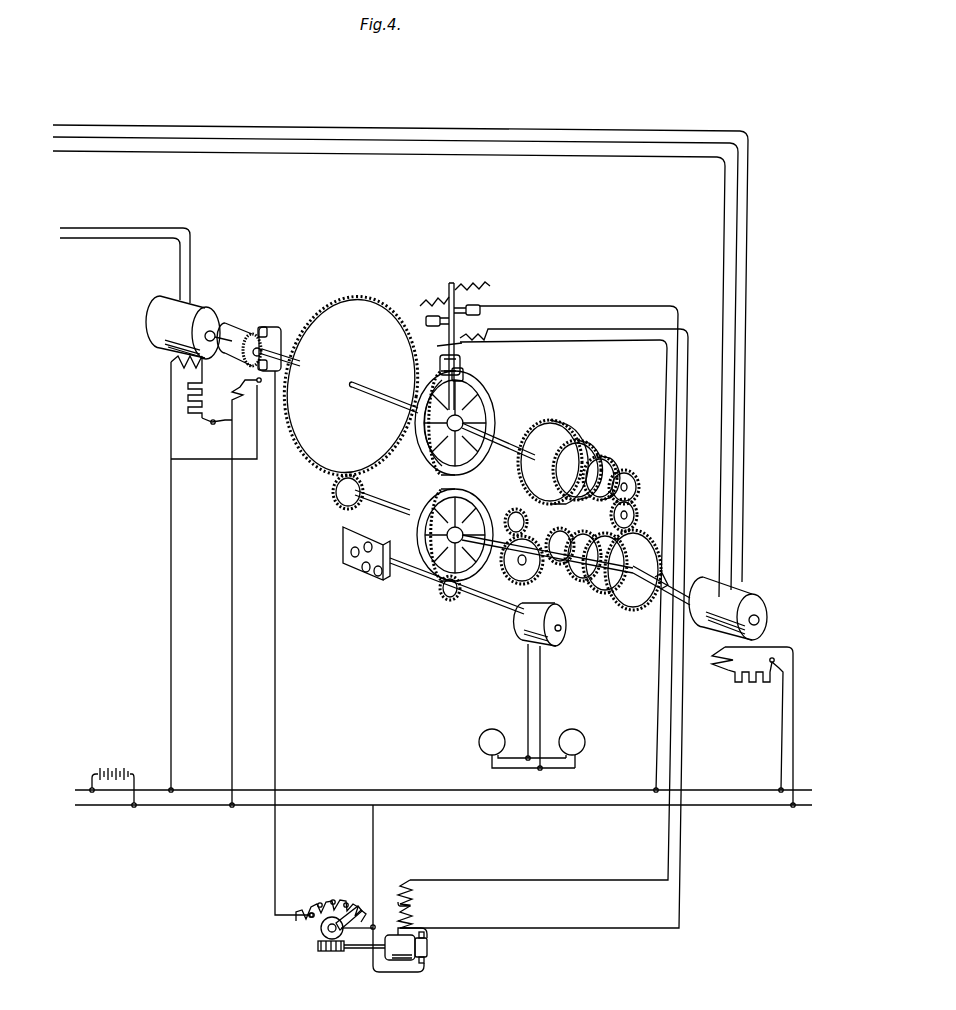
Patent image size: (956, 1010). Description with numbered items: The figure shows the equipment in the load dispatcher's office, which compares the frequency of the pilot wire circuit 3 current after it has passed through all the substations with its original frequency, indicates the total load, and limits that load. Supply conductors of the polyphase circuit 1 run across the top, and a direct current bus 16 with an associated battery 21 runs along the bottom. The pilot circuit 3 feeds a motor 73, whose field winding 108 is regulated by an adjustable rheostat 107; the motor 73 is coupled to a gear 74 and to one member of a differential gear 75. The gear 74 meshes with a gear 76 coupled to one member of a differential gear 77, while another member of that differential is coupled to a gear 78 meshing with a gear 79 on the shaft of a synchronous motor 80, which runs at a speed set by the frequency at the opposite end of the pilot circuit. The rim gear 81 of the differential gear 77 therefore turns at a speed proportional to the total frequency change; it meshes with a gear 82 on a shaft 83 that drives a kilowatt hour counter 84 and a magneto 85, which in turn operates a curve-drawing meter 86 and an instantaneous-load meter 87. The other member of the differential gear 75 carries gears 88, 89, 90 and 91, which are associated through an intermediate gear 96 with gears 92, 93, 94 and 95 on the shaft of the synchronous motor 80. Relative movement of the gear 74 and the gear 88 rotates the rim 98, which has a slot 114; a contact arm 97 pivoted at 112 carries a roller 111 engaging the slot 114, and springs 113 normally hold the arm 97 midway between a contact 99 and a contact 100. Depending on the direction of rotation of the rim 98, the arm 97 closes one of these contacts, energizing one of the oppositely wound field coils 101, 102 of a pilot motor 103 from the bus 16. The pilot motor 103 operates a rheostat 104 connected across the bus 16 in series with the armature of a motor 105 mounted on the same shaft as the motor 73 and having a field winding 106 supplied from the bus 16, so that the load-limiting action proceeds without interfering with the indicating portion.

The polyphase circuit 1 is at (344, 140).
The pilot wire circuit 3 is at (107, 236).
The direct current bus 16 is at (357, 803).
The battery 21 is at (111, 768).
The motor 73 is at (175, 346).
The gear 74 is at (351, 386).
The differential gear 75 is at (490, 397).
The gear 76 is at (333, 495).
The differential gear 77 is at (425, 500).
The gear 78 is at (528, 576).
The gear 79 is at (520, 516).
The synchronous motor 80 is at (722, 632).
The rim gear 81 is at (470, 498).
The gear 82 is at (442, 594).
The shaft 83 is at (474, 600).
The kilowatt hour counter 84 is at (345, 572).
The magneto 85 is at (520, 632).
The meter 86 is at (490, 728).
The meter 87 is at (582, 734).
The gear 88 is at (578, 430).
The gear 89 is at (596, 446).
The gear 90 is at (612, 462).
The gear 91 is at (632, 478).
The gear 92 is at (633, 595).
The gear 93 is at (598, 592).
The gear 94 is at (578, 575).
The gear 95 is at (556, 560).
The intermediate gear 96 is at (636, 510).
The contact arm 97 is at (456, 304).
The rim 98 is at (494, 410).
The contact 99 is at (430, 318).
The contact 100 is at (478, 312).
The field coil 101 is at (416, 893).
The field coil 102 is at (416, 915).
The pilot motor 103 is at (430, 947).
The rheostat 104 is at (328, 893).
The motor 105 is at (248, 325).
The field winding 106 is at (230, 390).
The adjustable rheostat 107 is at (198, 422).
The field winding 108 is at (168, 366).
The roller 111 is at (462, 364).
The pivot 112 is at (544, 628).
The springs 113 is at (458, 284).
The slot 114 is at (465, 380).